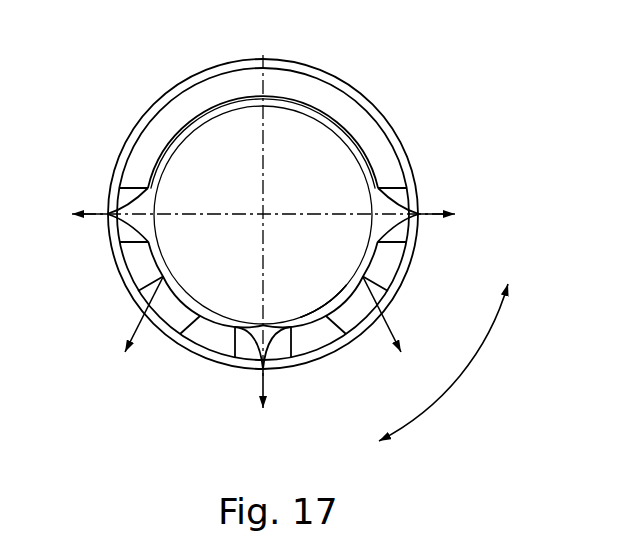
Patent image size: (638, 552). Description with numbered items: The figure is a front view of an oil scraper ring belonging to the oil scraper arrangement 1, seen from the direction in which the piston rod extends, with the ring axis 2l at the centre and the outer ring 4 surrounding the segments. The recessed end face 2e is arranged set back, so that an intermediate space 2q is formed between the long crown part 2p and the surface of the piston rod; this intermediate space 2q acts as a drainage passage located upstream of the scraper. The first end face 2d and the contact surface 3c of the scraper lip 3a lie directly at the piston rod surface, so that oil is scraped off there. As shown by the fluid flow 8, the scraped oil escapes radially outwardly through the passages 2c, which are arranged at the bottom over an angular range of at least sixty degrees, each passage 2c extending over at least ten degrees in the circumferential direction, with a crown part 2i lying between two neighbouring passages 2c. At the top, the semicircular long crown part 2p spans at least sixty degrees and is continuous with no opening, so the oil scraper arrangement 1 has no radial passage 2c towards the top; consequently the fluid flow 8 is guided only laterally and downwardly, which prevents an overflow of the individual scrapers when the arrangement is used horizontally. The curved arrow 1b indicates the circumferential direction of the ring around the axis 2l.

The oil scraper arrangement 1 is at (438, 90).
The rotation direction 1b is at (468, 370).
The passage 2c is at (410, 197).
The first end face 2d is at (328, 292).
The recessed end face 2e is at (242, 110).
The crown part 2i is at (121, 267).
The axis 2l is at (262, 213).
The long crown part 2p is at (190, 102).
The intermediate space 2q is at (355, 134).
The scraper lip 3a is at (205, 121).
The contact surface 3c is at (328, 292).
The outer ring 4 is at (363, 101).
The fluid flow 8 is at (87, 213).